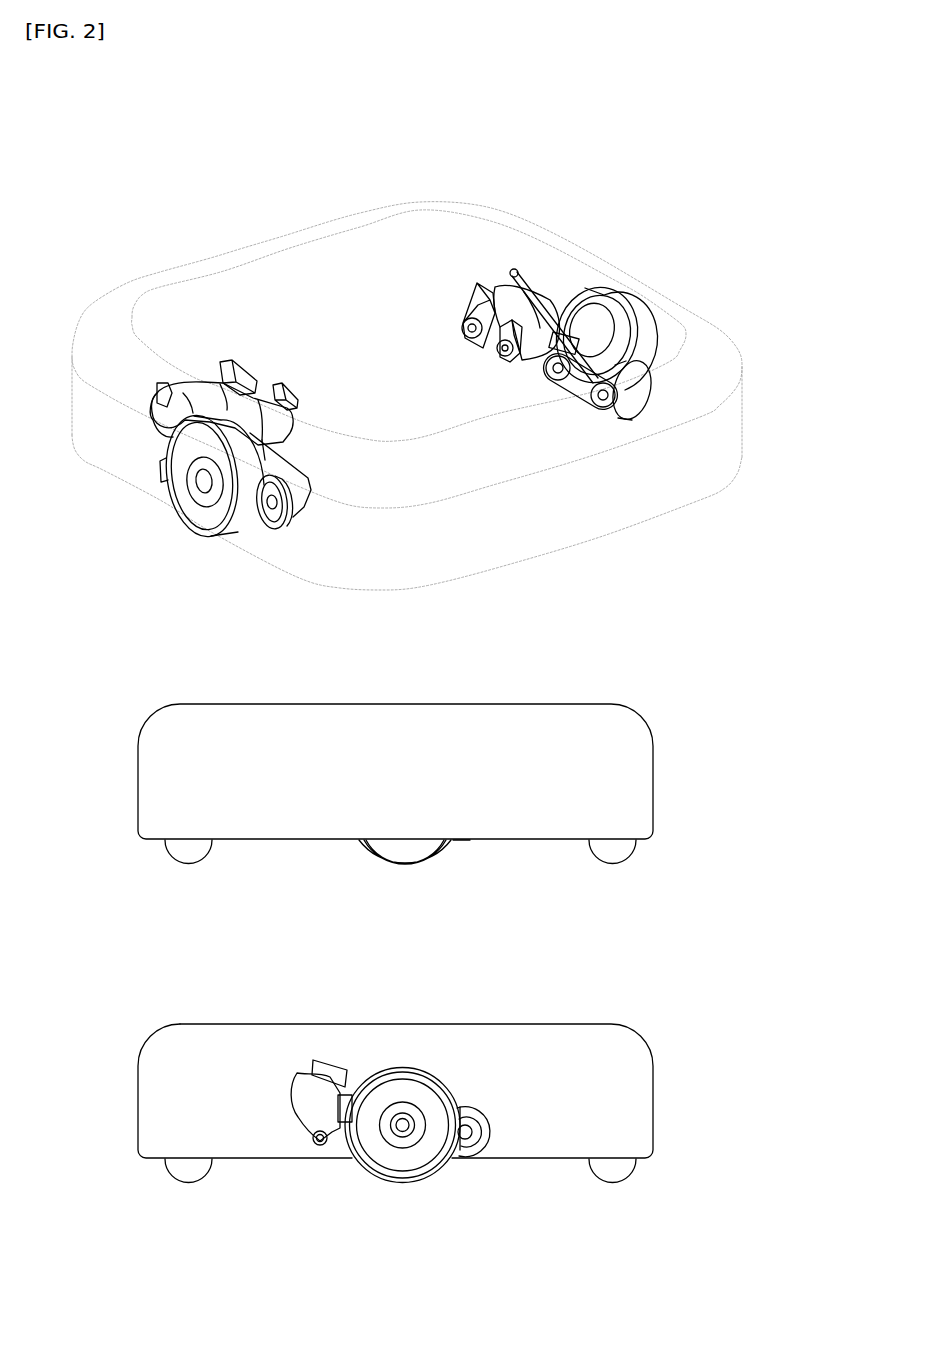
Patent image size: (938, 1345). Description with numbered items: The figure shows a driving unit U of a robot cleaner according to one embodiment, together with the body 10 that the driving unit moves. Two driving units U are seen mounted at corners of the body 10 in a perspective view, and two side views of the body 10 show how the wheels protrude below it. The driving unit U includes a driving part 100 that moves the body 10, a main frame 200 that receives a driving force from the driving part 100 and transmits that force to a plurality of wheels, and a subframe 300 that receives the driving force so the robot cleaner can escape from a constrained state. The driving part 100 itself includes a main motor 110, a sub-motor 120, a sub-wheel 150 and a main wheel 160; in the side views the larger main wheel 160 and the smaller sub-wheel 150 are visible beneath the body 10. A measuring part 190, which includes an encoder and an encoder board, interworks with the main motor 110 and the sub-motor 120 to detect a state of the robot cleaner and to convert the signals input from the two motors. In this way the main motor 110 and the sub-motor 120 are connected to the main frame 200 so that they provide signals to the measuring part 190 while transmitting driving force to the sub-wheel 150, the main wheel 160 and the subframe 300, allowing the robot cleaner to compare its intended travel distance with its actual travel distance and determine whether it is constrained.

The body 10 is at (718, 335).
The driving part 100 is at (500, 281).
The main motor 110 is at (222, 376).
The sub-motor 120 is at (292, 432).
The sub-wheel 150 is at (462, 1160).
The main wheel 160 is at (405, 862).
The measuring part 190 is at (287, 390).
The main frame 200 is at (565, 305).
The subframe 300 is at (593, 345).
The driving unit U is at (540, 178).